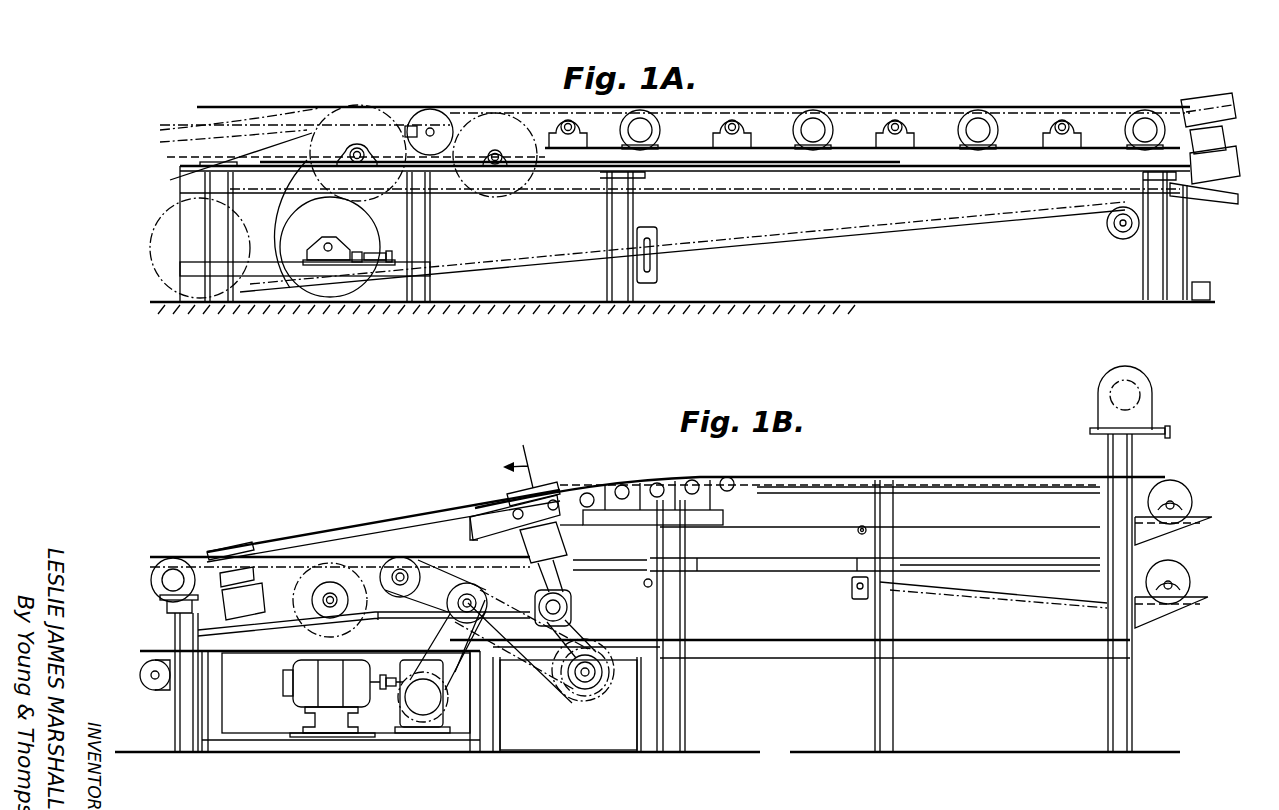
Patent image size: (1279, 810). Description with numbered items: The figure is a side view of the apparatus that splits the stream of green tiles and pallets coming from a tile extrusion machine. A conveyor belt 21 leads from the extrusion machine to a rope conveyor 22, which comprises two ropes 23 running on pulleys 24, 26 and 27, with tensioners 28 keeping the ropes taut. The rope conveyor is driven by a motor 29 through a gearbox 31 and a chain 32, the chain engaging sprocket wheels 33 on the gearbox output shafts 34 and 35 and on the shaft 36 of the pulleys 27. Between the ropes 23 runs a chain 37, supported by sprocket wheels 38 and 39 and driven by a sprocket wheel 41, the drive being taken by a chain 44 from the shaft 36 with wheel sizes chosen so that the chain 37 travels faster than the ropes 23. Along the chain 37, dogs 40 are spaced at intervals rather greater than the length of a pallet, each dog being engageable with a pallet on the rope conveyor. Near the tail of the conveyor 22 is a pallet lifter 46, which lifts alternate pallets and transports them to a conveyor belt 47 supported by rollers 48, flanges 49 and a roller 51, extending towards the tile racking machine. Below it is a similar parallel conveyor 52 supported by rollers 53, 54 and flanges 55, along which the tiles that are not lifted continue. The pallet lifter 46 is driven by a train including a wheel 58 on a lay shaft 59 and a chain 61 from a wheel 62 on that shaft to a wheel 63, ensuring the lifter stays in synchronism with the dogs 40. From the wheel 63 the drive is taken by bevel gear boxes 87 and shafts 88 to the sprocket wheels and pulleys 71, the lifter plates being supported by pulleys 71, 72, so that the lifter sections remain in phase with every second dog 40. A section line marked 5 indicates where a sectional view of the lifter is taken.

In FIG. 1A, the conveyor belt 21 is at (253, 107).
In FIG. 1A, the rope conveyor 22 is at (690, 106).
In FIG. 1A, the ropes 23 is at (360, 110).
In FIG. 1A, the pulleys 24 is at (666, 140).
In FIG. 1B, the pulleys 24 is at (155, 692).
In FIG. 1A, the pulleys 26 is at (344, 219).
In FIG. 1A, the tensioners 28 is at (386, 242).
In FIG. 1A, the chain 37 is at (956, 107).
In FIG. 1A, the sprocket wheels 38 is at (553, 120).
In FIG. 1A, the sprocket wheels 39 is at (528, 162).
In FIG. 1A, the dogs 40 is at (945, 104).
In FIG. 1B, the dogs 40 is at (198, 558).
In FIG. 1A, the pulleys 72 is at (1204, 94).
In FIG. 1B, the pulleys 72 is at (226, 540).
In FIG. 1B, the section line 5 is at (567, 707).
In FIG. 1B, the pulleys 27 is at (446, 570).
In FIG. 1B, the motor 29 is at (323, 686).
In FIG. 1B, the gearbox 31 is at (395, 687).
In FIG. 1B, the chain 32 is at (474, 690).
In FIG. 1B, the sprocket wheels 33 is at (453, 728).
In FIG. 1B, the gearbox output shaft 34 is at (330, 733).
In FIG. 1B, the gearbox output shaft 35 is at (448, 601).
In FIG. 1B, the shaft 36 is at (462, 666).
In FIG. 1B, the sprocket wheel 41 is at (296, 560).
In FIG. 1B, the chain 44 is at (366, 570).
In FIG. 1B, the pallet lifter 46 is at (427, 503).
In FIG. 1B, the conveyor belt 47 is at (824, 476).
In FIG. 1B, the rollers 48 is at (594, 492).
In FIG. 1B, the flanges 49 is at (949, 488).
In FIG. 1B, the roller 51 is at (1164, 487).
In FIG. 1B, the conveyor 52 is at (776, 559).
In FIG. 1B, the rollers 53 is at (420, 562).
In FIG. 1B, the rollers 54 is at (1173, 572).
In FIG. 1B, the flanges 55 is at (1018, 567).
In FIG. 1B, the wheel 58 is at (615, 680).
In FIG. 1B, the lay shaft 59 is at (592, 677).
In FIG. 1B, the chain 61 is at (570, 627).
In FIG. 1B, the wheel 62 is at (596, 692).
In FIG. 1B, the wheel 63 is at (568, 618).
In FIG. 1B, the pulleys 71 is at (552, 481).
In FIG. 1B, the bevel gear boxes 87 is at (570, 600).
In FIG. 1B, the shafts 88 is at (570, 536).